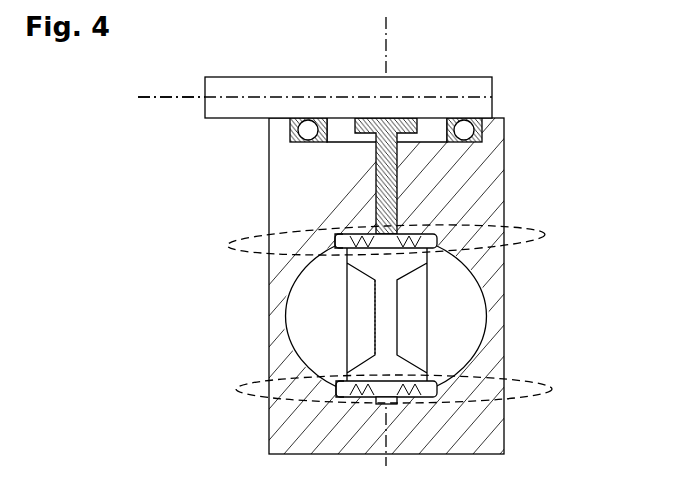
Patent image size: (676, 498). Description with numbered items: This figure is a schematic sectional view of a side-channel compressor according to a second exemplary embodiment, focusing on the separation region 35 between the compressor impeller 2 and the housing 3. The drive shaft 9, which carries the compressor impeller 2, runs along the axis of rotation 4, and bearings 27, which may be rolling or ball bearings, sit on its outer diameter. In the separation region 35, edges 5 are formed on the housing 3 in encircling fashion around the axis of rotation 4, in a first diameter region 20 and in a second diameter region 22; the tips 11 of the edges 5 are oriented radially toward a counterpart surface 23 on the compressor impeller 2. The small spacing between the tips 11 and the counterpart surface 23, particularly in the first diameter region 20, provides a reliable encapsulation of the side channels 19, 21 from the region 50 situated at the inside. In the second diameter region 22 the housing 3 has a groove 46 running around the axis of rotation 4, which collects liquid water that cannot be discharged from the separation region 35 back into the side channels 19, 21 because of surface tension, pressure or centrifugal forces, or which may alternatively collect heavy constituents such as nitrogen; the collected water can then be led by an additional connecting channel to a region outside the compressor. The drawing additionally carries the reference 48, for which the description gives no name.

The compressor impeller 2 is at (398, 182).
The housing 3 is at (475, 157).
The axis of rotation 4 is at (166, 97).
The edges 5 is at (462, 317).
The drive shaft 9 is at (477, 92).
The tips 11 is at (412, 232).
The side channel 19 is at (475, 318).
The first diameter region 20 is at (228, 233).
The side channel 21 is at (300, 318).
The second diameter region 22 is at (552, 388).
The counterpart surface 23 is at (413, 250).
The bearing 27 is at (447, 143).
The separation region 35 is at (324, 238).
The groove 46 is at (376, 400).
The axis of rotation 48 is at (390, 28).
The region situated at the inside 50 is at (343, 128).